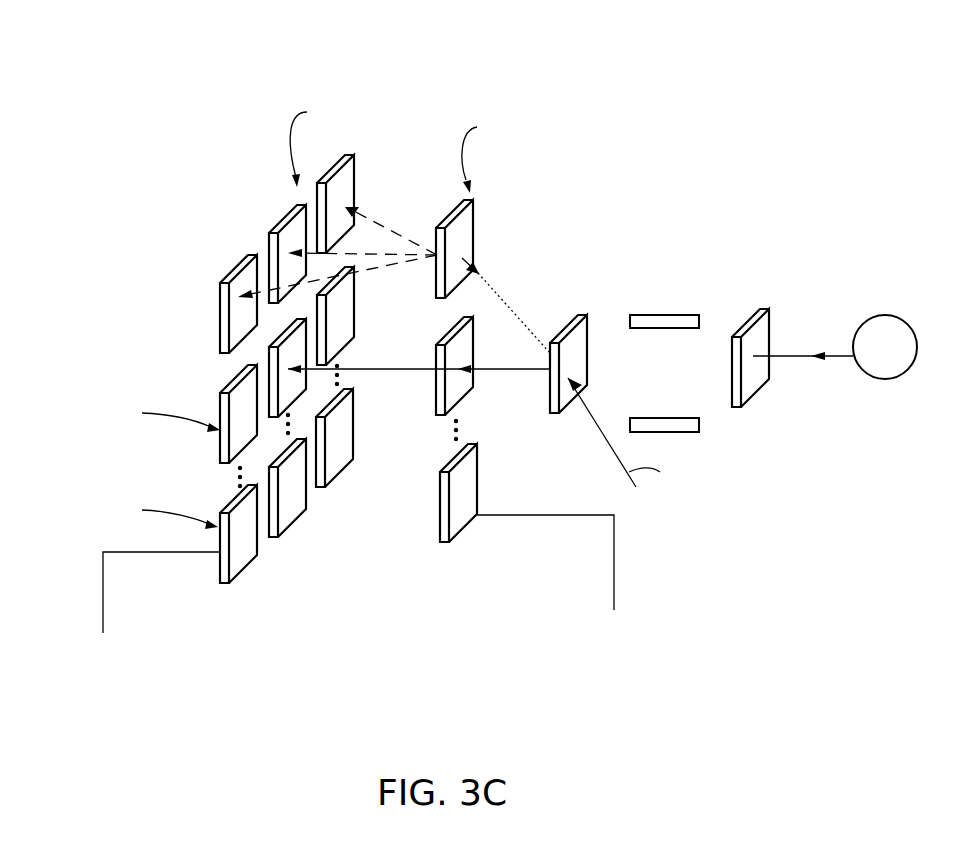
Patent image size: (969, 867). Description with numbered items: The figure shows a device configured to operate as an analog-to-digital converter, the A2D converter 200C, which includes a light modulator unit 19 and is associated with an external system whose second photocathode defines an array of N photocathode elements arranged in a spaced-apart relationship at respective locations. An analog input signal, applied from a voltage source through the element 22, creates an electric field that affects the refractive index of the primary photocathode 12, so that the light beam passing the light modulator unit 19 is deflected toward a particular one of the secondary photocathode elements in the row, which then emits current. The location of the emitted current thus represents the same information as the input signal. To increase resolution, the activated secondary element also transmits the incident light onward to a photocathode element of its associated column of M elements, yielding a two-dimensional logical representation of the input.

The A2D converter 200C is at (698, 104).
The primary Photocathode 12 is at (585, 300).
The light modulator unit 19 is at (725, 287).
The input plate / modulator 22 is at (757, 398).